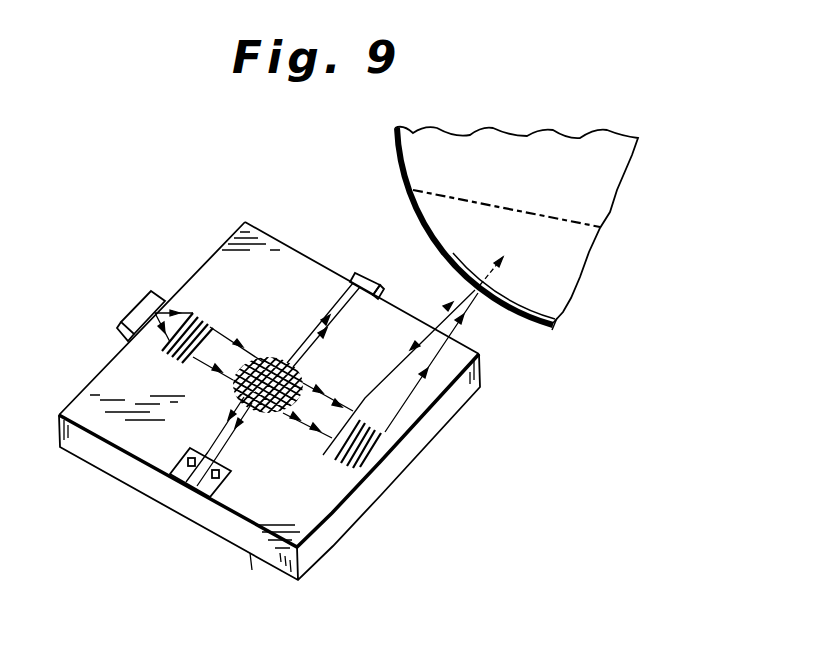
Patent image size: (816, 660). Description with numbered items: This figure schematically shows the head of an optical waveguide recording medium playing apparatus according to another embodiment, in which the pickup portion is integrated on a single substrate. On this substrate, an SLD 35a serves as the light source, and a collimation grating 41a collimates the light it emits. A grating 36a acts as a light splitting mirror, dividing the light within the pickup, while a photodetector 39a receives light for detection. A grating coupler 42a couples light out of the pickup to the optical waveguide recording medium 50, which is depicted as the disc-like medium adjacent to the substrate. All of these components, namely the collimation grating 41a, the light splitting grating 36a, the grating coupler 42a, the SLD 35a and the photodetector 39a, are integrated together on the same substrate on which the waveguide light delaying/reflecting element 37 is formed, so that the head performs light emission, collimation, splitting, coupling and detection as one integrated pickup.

The SLD 35a is at (121, 323).
The collimation grating 41a is at (204, 322).
The photodetector 39a is at (355, 273).
The grating as a light splitting mirror 36a is at (272, 410).
The waveguide light delaying/reflecting element 37 is at (188, 500).
The grating coupler 42a is at (362, 464).
The optical waveguide recording medium 50 is at (556, 330).